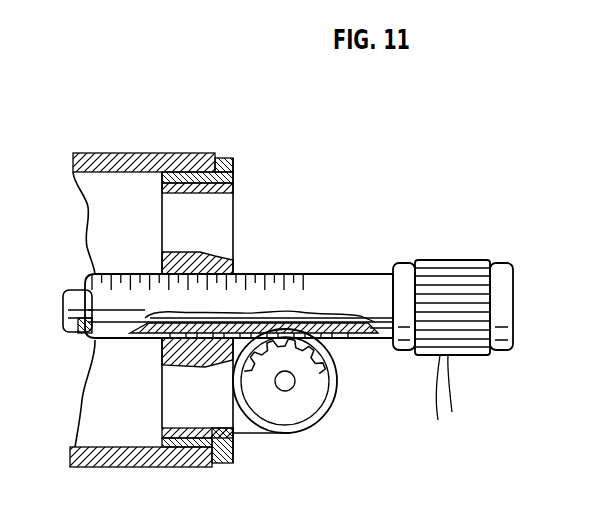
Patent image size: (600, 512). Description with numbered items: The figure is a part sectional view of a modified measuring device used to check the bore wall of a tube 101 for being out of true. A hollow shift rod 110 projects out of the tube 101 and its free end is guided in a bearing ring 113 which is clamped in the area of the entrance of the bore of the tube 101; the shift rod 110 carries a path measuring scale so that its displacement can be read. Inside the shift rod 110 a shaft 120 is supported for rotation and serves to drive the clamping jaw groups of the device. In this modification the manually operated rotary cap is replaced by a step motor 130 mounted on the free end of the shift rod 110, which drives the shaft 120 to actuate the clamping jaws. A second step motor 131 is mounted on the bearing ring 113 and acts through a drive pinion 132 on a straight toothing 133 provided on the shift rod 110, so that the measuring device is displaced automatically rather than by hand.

The tube 101 is at (133, 162).
The bearing ring 113 is at (235, 218).
The shift rod 110 is at (337, 272).
The shaft 120 is at (72, 293).
The step motor 130 is at (450, 275).
The step motor 131 is at (317, 428).
The drive pinion 132 is at (333, 390).
The straight toothing 133 is at (345, 340).